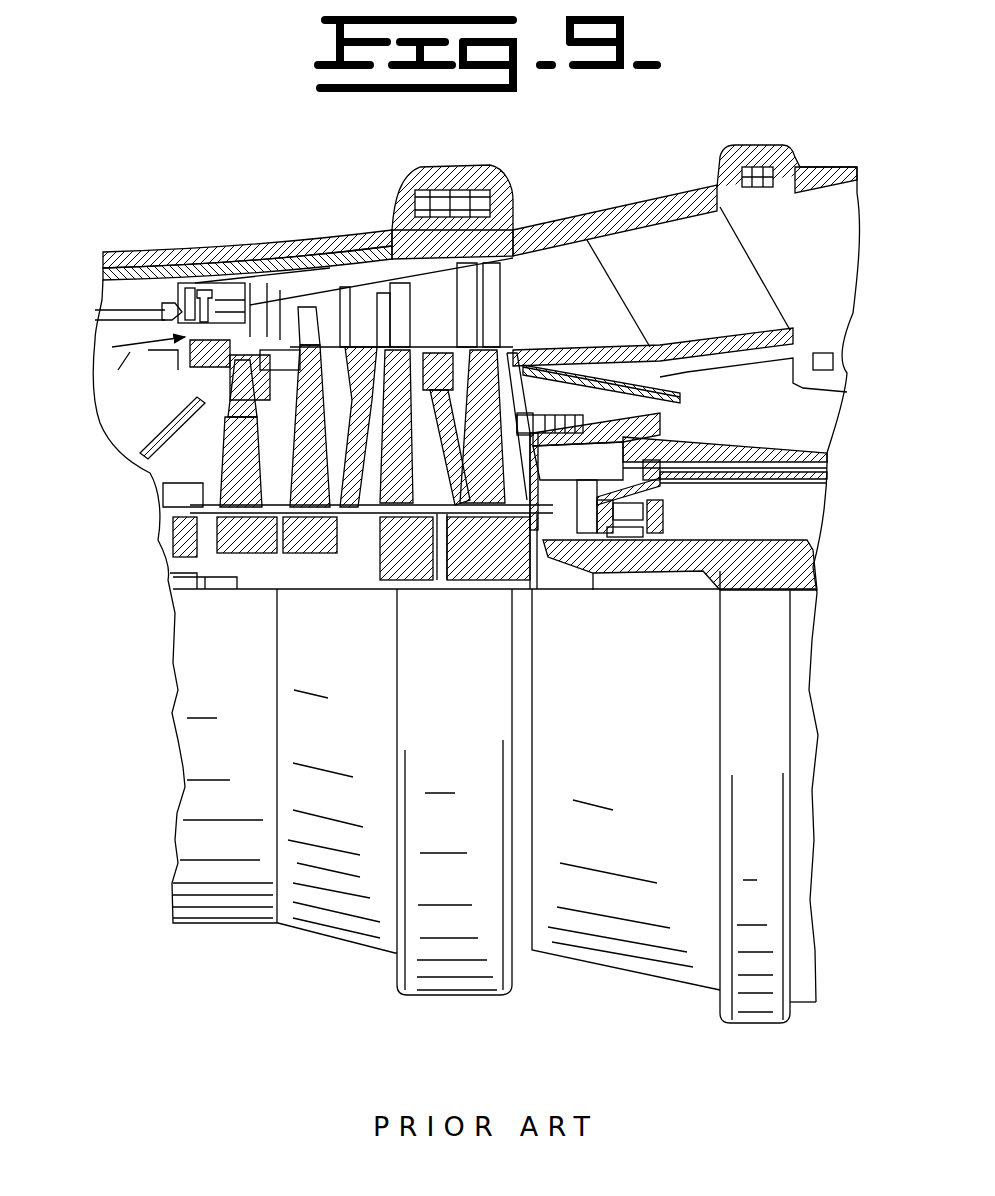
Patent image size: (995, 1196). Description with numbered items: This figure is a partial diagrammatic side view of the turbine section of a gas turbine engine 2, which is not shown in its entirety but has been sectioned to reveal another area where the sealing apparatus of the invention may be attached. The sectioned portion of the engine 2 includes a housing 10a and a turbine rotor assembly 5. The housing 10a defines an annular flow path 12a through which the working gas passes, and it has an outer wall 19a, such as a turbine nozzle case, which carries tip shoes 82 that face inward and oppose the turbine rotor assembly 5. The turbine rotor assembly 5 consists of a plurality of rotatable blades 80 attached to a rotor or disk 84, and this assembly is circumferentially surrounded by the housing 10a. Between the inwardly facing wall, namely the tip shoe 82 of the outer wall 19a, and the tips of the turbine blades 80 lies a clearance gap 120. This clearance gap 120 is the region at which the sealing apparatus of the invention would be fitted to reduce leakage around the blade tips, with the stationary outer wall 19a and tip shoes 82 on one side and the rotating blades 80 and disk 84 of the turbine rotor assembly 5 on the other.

The gas turbine engine 2 is at (285, 967).
The turbine rotor assembly 5 is at (297, 550).
The housing 10a is at (575, 224).
The annular flow path 12a is at (840, 245).
The outer wall 19a is at (292, 300).
The rotatable blades 80 is at (330, 320).
The tip shoes 82 is at (283, 318).
The rotor or disk 84 is at (303, 440).
The clearance gap 120 is at (215, 360).